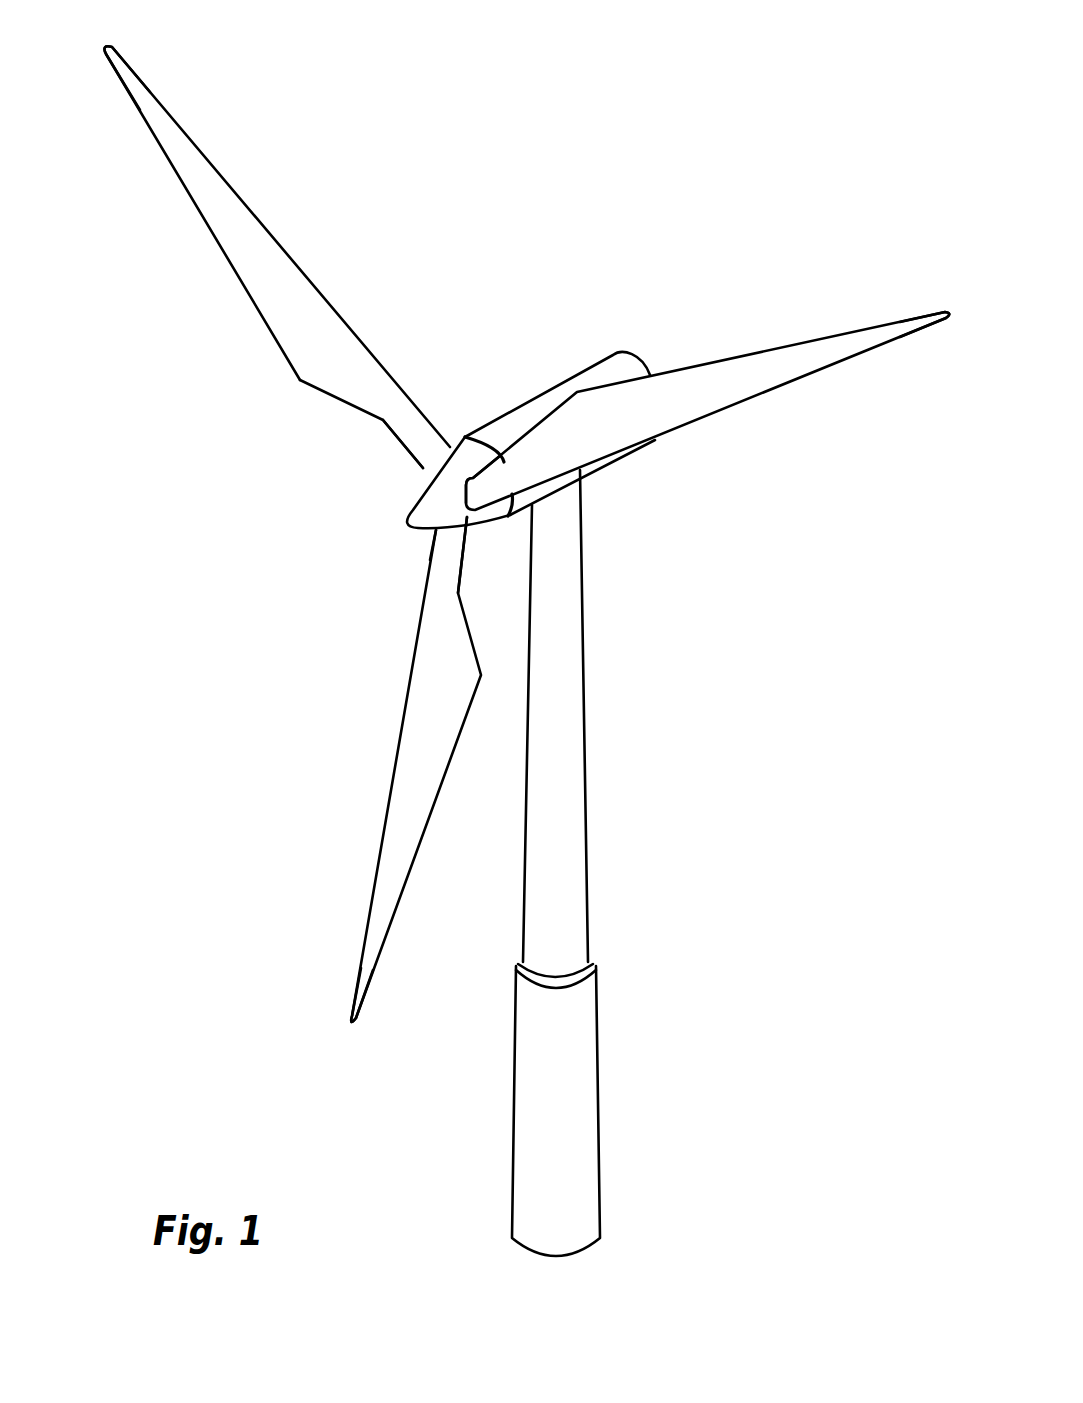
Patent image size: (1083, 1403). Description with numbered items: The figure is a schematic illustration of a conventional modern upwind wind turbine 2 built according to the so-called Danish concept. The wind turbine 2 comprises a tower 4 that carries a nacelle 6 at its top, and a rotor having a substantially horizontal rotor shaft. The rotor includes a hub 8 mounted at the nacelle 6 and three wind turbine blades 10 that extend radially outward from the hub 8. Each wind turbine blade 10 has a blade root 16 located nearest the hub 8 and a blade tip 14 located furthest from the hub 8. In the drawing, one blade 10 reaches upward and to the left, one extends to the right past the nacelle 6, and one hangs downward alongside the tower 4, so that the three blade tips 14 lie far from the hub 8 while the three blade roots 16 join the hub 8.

The wind turbine 2 is at (683, 802).
The tower 4 is at (575, 723).
The nacelle 6 is at (520, 420).
The hub 8 is at (425, 503).
The wind turbine blade 10 is at (310, 352).
The blade tip 14 is at (150, 105).
The blade root 16 is at (434, 458).